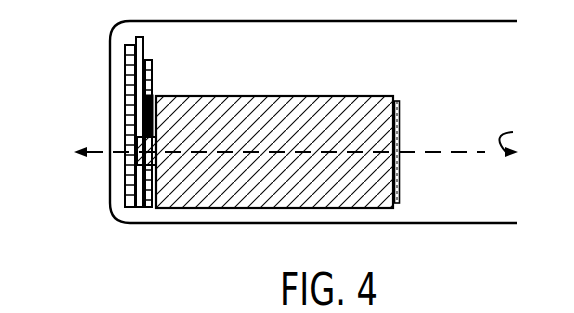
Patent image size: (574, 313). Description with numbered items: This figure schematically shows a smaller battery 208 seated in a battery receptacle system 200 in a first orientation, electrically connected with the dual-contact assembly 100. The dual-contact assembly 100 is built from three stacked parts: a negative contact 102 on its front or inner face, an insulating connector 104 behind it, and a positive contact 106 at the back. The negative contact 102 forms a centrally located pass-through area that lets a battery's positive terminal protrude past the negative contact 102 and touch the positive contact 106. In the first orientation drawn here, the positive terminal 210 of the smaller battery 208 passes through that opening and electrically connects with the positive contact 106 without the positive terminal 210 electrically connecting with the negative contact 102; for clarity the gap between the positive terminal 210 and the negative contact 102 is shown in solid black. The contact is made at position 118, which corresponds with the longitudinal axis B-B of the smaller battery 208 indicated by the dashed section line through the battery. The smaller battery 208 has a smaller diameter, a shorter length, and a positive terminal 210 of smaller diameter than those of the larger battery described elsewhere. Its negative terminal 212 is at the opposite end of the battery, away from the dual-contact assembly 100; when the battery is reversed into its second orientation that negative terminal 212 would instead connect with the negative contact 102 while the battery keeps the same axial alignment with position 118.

The dual-contact assembly 100 is at (116, 163).
The negative contact 102 is at (146, 208).
The insulating connector 104 is at (138, 208).
The positive contact 106 is at (130, 208).
The position 118 is at (127, 152).
The battery receptacle system 200 is at (500, 21).
The smaller battery 208 is at (346, 95).
The positive terminal 210 is at (141, 136).
The negative terminal 212 is at (398, 127).